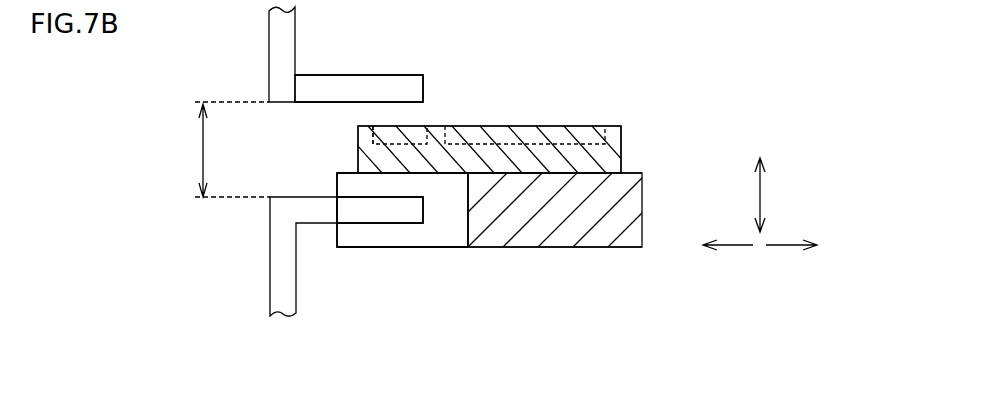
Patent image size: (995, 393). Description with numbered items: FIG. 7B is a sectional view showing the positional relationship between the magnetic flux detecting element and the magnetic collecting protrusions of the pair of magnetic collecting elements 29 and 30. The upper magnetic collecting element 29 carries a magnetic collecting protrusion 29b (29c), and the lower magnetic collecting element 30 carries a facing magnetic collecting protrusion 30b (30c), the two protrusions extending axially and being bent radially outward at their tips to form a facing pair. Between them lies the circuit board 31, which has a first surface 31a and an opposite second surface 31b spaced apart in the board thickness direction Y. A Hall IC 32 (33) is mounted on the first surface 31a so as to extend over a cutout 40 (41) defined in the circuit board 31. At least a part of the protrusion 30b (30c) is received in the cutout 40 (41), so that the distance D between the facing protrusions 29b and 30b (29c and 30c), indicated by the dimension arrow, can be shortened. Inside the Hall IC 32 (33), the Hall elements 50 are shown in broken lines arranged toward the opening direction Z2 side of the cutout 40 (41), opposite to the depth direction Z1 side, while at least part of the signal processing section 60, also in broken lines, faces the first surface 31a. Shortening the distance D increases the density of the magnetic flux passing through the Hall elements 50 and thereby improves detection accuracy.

The magnetic collecting element 29 is at (259, 52).
The magnetic collecting protrusion 29b is at (372, 83).
The magnetic collecting protrusion 29c is at (375, 66).
The magnetic collecting element 30 is at (260, 275).
The magnetic collecting protrusion 30b is at (376, 212).
The magnetic collecting protrusion 30c is at (380, 255).
The circuit board 31 is at (654, 195).
The first surface 31a is at (594, 173).
The second surface 31b is at (596, 247).
The Hall IC 32 is at (528, 117).
The Hall IC 33 is at (489, 118).
The cutout 40 is at (444, 233).
The cutout 41 is at (506, 298).
The Hall element 50 is at (373, 144).
The signal processing section 60 is at (606, 126).
The distance D is at (201, 151).
The board thickness direction Y is at (763, 193).
The depth direction Z1 is at (785, 248).
The opening direction Z2 is at (735, 248).